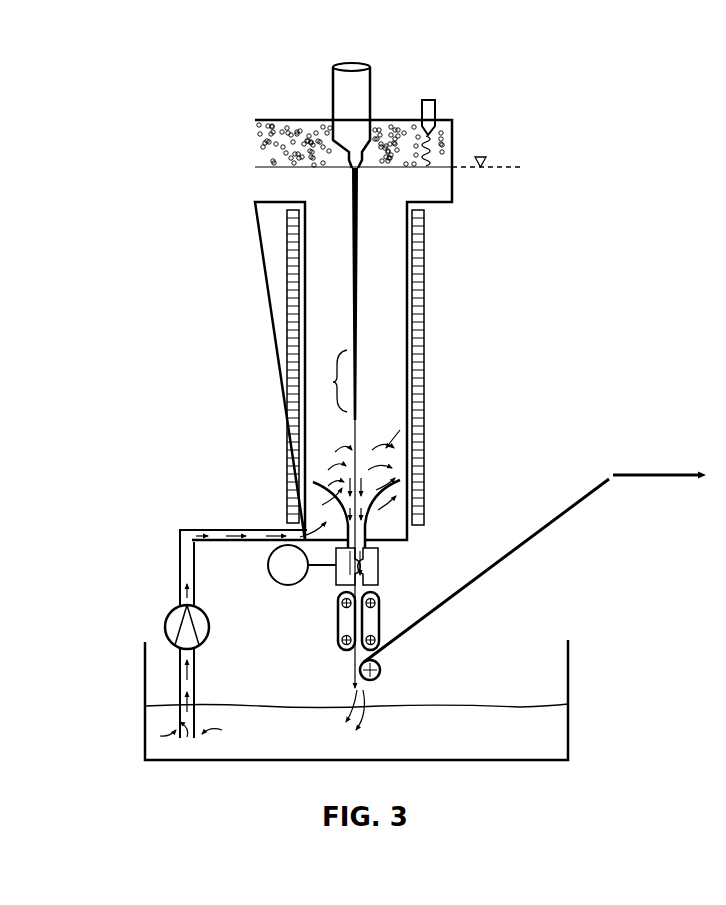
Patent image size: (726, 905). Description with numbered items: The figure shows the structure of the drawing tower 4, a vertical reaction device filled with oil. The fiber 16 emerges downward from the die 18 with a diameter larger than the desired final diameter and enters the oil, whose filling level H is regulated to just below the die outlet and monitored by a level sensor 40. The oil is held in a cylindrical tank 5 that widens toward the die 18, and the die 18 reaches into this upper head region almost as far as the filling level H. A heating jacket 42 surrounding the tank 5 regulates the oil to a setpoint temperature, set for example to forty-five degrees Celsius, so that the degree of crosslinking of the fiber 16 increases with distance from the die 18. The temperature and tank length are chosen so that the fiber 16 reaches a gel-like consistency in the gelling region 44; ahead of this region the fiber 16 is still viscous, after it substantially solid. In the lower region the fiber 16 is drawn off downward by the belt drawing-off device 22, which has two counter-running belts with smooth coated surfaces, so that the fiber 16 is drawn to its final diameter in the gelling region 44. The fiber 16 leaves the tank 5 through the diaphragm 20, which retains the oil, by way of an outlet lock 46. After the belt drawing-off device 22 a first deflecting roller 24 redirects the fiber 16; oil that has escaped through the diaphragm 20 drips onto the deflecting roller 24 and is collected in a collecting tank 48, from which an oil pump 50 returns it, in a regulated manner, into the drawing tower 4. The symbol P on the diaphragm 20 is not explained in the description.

The drawing tower 4 is at (510, 226).
The cylindrical tank 5 is at (406, 322).
The fiber 16 is at (352, 418).
The die 18 is at (333, 88).
The diaphragm 20 is at (385, 562).
The belt drawing-off device 22 is at (338, 626).
The first deflecting roller 24 is at (380, 663).
The level sensor 40 is at (433, 92).
The heating jacket 42 is at (418, 272).
The gelling region 44 is at (333, 382).
The outlet lock 46 is at (326, 502).
The collecting tank 48 is at (570, 668).
The oil pump 50 is at (166, 620).
The filling level H is at (498, 167).
The pressure source P is at (302, 565).